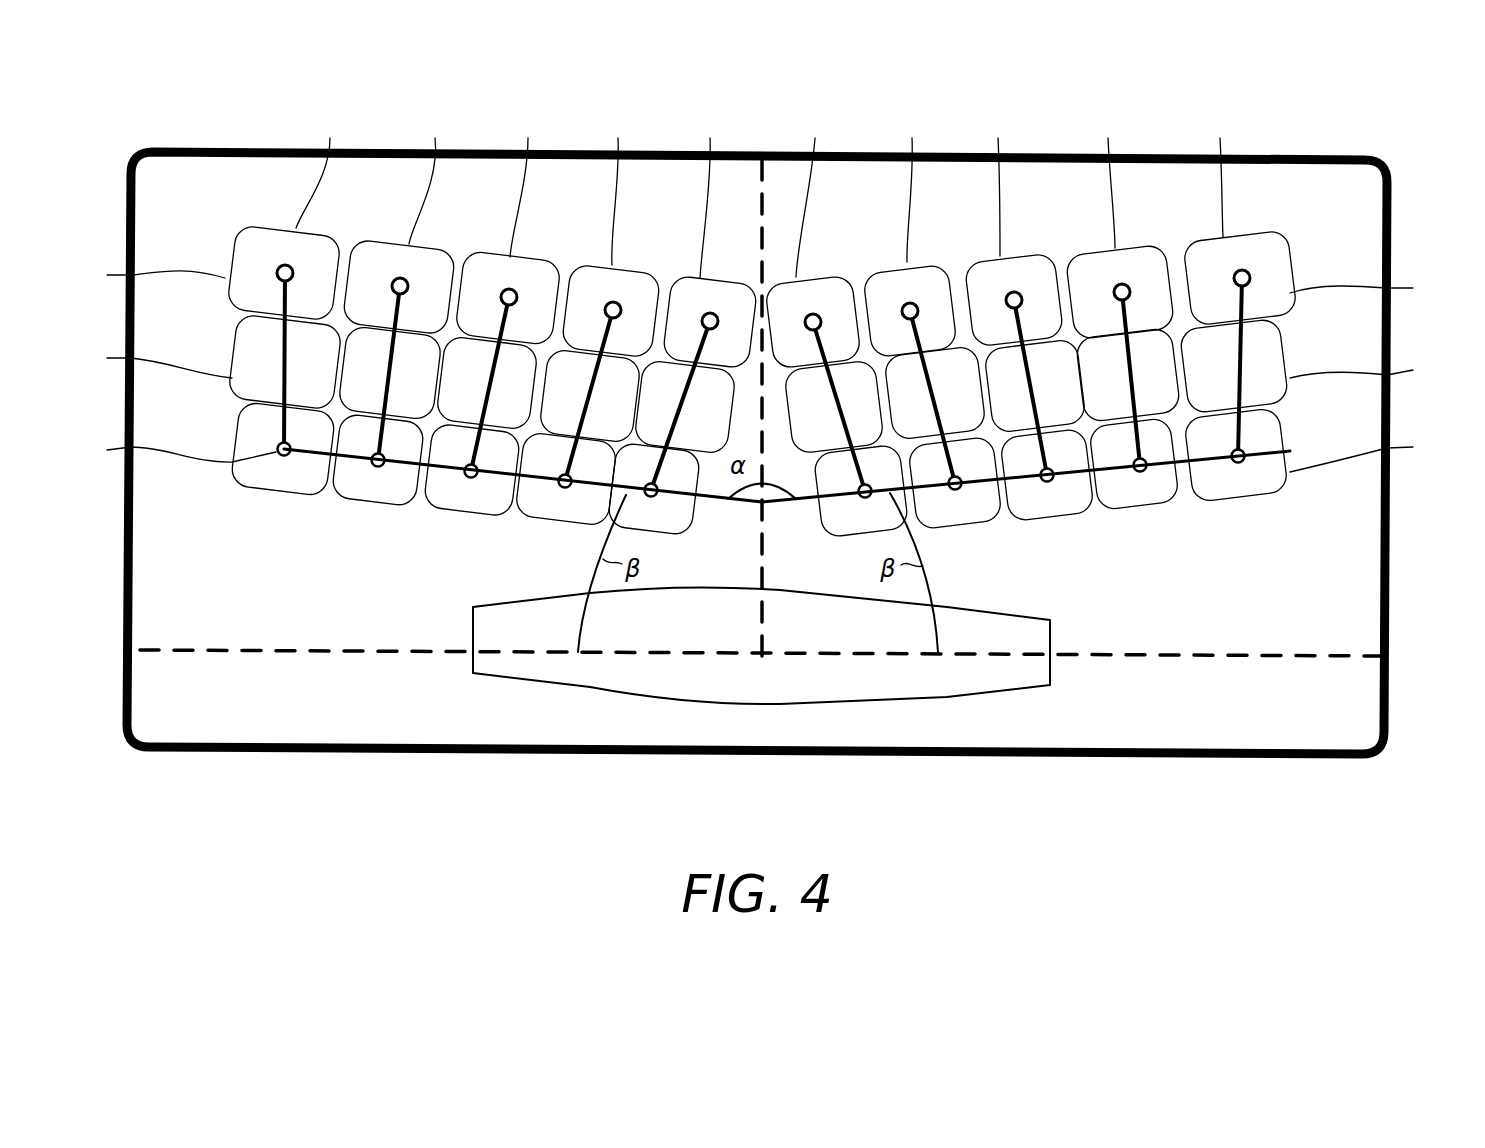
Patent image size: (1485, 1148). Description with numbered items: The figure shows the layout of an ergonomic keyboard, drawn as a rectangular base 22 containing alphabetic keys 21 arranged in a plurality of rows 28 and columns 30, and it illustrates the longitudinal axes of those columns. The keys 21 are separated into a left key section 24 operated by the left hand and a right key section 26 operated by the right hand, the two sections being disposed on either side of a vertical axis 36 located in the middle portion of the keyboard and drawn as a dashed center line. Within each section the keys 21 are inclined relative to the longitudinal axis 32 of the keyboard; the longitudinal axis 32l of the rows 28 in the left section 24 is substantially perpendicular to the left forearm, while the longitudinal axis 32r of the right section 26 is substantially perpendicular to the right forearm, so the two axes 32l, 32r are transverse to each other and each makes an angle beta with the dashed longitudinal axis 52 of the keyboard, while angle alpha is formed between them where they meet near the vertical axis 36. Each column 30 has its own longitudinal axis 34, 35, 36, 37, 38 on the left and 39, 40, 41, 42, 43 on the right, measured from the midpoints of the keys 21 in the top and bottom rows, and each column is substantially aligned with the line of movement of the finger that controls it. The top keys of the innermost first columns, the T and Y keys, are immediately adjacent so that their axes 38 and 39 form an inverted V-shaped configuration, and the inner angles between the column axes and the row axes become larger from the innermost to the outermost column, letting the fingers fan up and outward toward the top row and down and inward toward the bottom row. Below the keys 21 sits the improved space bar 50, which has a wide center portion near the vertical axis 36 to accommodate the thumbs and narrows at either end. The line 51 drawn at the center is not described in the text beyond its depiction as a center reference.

The keys 21 is at (270, 188).
The rectangular base 22 is at (180, 148).
The left key section 24 is at (365, 197).
The right key section 26 is at (1301, 205).
The rows 28 is at (232, 336).
The columns 30 is at (583, 262).
The longitudinal axis 32 is at (744, 503).
The longitudinal axis of left section 32l is at (424, 461).
The longitudinal axis of right section 32r is at (1010, 476).
The longitudinal axis of column 34 is at (283, 428).
The longitudinal axis of column 35 is at (377, 437).
The vertical axis 36 is at (471, 445).
The longitudinal axis of column 37 is at (568, 436).
The longitudinal axis of left first column 38 is at (660, 458).
The longitudinal axis of right first column 39 is at (862, 462).
The longitudinal axis of column 40 is at (950, 457).
The longitudinal axis of column 41 is at (1053, 450).
The longitudinal axis of column 42 is at (1143, 447).
The longitudinal axis of column 43 is at (1238, 438).
The space bar 50 is at (1022, 688).
The vertical center line 51 is at (758, 195).
The longitudinal axis of keyboard 52 is at (1167, 660).